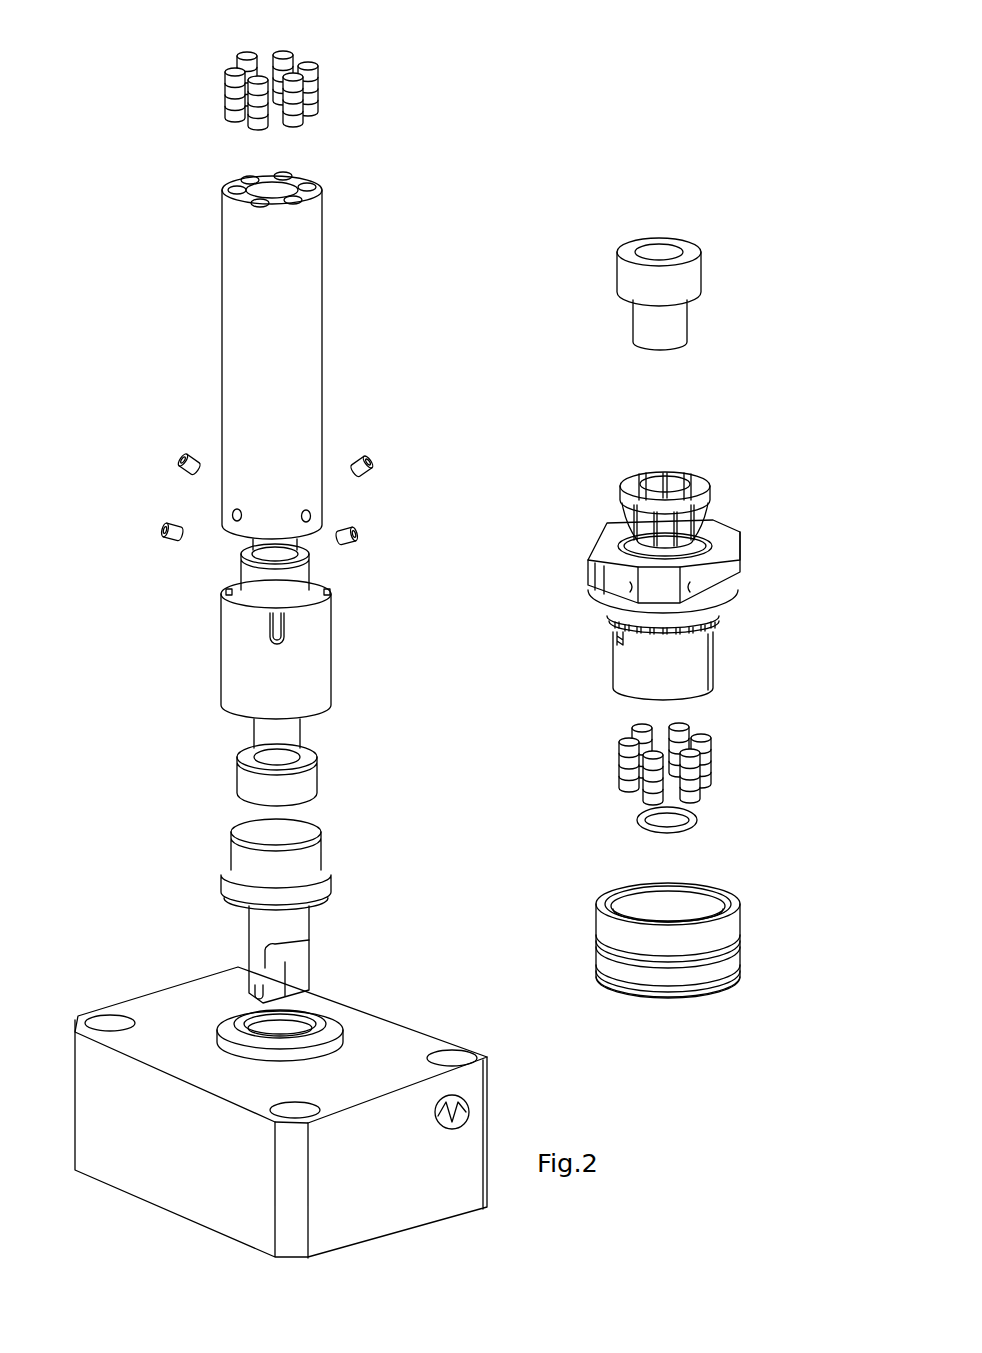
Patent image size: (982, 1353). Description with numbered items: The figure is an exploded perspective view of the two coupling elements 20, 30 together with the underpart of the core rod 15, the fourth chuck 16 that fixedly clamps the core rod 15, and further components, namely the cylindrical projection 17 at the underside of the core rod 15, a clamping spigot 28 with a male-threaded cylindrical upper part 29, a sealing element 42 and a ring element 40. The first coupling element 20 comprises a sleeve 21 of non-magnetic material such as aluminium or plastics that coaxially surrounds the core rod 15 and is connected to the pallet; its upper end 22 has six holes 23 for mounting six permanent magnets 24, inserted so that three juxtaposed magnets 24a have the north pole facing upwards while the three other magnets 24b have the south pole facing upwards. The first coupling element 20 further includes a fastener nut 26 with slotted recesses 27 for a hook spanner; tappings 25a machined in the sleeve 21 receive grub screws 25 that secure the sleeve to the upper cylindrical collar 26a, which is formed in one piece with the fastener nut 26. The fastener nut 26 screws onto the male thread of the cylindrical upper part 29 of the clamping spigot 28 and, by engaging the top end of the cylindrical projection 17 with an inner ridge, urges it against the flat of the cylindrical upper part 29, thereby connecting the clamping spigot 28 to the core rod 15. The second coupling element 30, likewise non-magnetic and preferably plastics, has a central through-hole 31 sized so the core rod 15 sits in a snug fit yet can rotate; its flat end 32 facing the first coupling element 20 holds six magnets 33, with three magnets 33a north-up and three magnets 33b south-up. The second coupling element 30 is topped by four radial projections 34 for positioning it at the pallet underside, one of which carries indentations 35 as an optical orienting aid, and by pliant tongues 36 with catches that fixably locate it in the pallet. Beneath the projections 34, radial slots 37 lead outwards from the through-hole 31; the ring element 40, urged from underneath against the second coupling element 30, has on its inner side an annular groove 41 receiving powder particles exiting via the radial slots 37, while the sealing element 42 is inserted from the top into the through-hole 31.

The core rod 15 is at (292, 732).
The fourth chuck 16 is at (512, 1080).
The cylindrical projection 17 is at (314, 777).
The first coupling element 20 is at (326, 324).
The sleeve 21 is at (313, 370).
The upper end 22 is at (226, 172).
The holes 23 is at (295, 198).
The permanent magnets 24 is at (318, 65).
The magnets 24a is at (257, 79).
The magnets 24b is at (294, 76).
The grub screws 25 is at (170, 530).
The tappings 25a is at (302, 510).
The fastener nut 26 is at (304, 649).
The upper cylindrical collar 26a is at (304, 568).
The slotted recesses 27 is at (290, 630).
The clamping spigot 28 is at (330, 949).
The cylindrical upper part 29 is at (315, 855).
The second coupling element 30 is at (689, 582).
The central through-hole 31 is at (665, 467).
The flat end 32 is at (656, 683).
The magnets 33 is at (677, 779).
The magnets 33a is at (690, 797).
The magnets 33b is at (646, 795).
The radial projections 34 is at (639, 535).
The indentations 35 is at (592, 588).
The pliant tongues 36 is at (660, 473).
The radial slots 37 is at (680, 630).
The ring element 40 is at (697, 923).
The annular groove 41 is at (626, 903).
The sealing element 42 is at (722, 307).